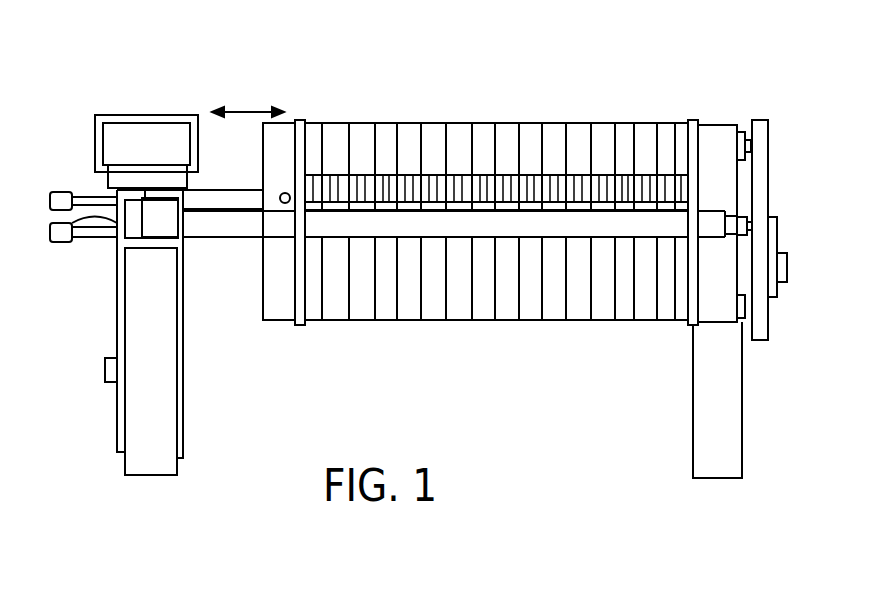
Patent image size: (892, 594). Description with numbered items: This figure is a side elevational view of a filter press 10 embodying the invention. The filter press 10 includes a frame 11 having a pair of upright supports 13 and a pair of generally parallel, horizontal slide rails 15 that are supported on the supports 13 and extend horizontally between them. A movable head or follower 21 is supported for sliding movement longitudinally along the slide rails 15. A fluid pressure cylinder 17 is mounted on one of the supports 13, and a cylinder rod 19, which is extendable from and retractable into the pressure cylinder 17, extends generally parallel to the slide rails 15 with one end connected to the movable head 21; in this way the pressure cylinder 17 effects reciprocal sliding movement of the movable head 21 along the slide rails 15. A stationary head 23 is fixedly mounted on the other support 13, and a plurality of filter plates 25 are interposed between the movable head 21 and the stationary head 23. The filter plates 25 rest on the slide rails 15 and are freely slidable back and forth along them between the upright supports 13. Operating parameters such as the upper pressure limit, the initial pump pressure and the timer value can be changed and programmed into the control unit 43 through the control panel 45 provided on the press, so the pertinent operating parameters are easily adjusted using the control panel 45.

The filter press 10 is at (640, 86).
The frame 11 is at (647, 398).
The upright supports 13 is at (160, 400).
The slide rails 15 is at (205, 222).
The fluid pressure cylinder 17 is at (88, 207).
The cylinder rod 19 is at (220, 198).
The movable head 21 is at (281, 305).
The stationary head 23 is at (725, 183).
The filter plates 25 is at (457, 130).
The control unit 43 is at (100, 133).
The control panel 45 is at (145, 133).